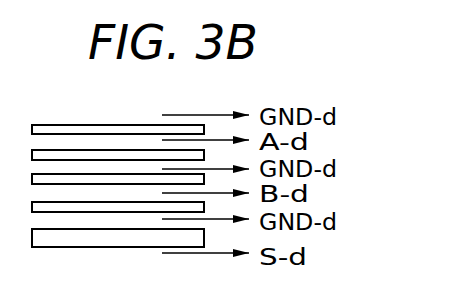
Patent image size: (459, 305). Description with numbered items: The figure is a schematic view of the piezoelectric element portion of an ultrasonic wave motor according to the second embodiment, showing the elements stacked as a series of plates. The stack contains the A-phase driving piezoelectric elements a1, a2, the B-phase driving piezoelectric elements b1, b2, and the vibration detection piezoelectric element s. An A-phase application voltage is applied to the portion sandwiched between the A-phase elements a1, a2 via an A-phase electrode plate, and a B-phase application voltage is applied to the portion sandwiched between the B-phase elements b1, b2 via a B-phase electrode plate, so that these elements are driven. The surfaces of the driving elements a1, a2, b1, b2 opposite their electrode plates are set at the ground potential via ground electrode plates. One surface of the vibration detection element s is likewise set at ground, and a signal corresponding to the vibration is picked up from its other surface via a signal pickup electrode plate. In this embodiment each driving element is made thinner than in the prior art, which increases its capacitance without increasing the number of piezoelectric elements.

The A-phase driving piezoelectric element a1 is at (104, 127).
The A-phase driving piezoelectric element a2 is at (104, 155).
The B-phase driving piezoelectric element b1 is at (104, 179).
The B-phase driving piezoelectric element b2 is at (104, 207).
The vibration detection piezoelectric element s is at (108, 237).